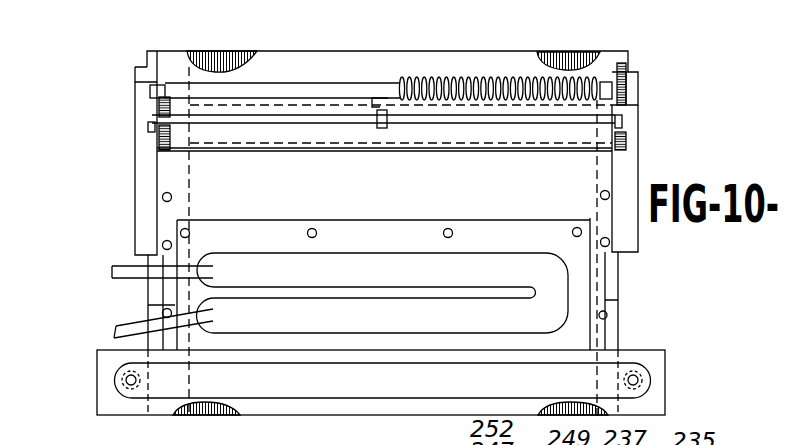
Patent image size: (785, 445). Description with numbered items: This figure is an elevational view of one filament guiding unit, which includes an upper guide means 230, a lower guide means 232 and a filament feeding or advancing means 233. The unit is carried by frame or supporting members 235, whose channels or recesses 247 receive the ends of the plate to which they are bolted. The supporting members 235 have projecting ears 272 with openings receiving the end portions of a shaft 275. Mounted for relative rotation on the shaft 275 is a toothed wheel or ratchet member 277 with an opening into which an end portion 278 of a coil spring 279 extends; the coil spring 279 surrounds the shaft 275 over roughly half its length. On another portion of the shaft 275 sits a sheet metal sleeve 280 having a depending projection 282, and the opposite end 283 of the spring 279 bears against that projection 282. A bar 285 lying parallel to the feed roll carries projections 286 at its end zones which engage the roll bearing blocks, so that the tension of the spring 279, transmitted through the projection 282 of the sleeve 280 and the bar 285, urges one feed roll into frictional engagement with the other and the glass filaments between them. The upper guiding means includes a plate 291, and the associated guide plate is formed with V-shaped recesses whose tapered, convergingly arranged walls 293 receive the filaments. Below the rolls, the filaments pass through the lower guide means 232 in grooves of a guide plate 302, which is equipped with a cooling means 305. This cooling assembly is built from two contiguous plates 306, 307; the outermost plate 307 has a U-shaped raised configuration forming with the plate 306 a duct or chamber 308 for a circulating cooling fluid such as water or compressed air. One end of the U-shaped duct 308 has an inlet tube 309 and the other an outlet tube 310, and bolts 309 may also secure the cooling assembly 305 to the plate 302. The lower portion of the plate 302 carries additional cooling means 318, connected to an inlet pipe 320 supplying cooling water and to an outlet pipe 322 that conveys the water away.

The upper guide means 230 is at (319, 48).
The plate 291 is at (172, 53).
The sheet metal sleeve 280 is at (338, 70).
The shaft 275 is at (398, 80).
The coil spring 279 is at (489, 78).
The tapered walls 293 is at (575, 55).
The end portion of coil spring 278 is at (607, 72).
The toothed wheel 277 is at (628, 63).
The ears 272 is at (145, 82).
The supporting members 235 is at (137, 162).
The channels 247 is at (150, 120).
The projections 286 is at (147, 128).
The bar 285 is at (432, 121).
The opposite end of spring 283 is at (366, 105).
The depending projection 282 is at (380, 125).
The guide plate 302 is at (528, 187).
The filament feeding means 233 is at (175, 157).
The lower guide means 232 is at (628, 317).
The cooling means 305 is at (258, 230).
The outermost plate 307 is at (342, 233).
The inlet tube 309 is at (181, 233).
The plate 306 is at (579, 230).
The outlet tube 310 is at (122, 266).
The duct 308 is at (554, 274).
The additional cooling means 318 is at (172, 398).
The outlet pipe 322 is at (115, 386).
The inlet pipe 320 is at (653, 368).